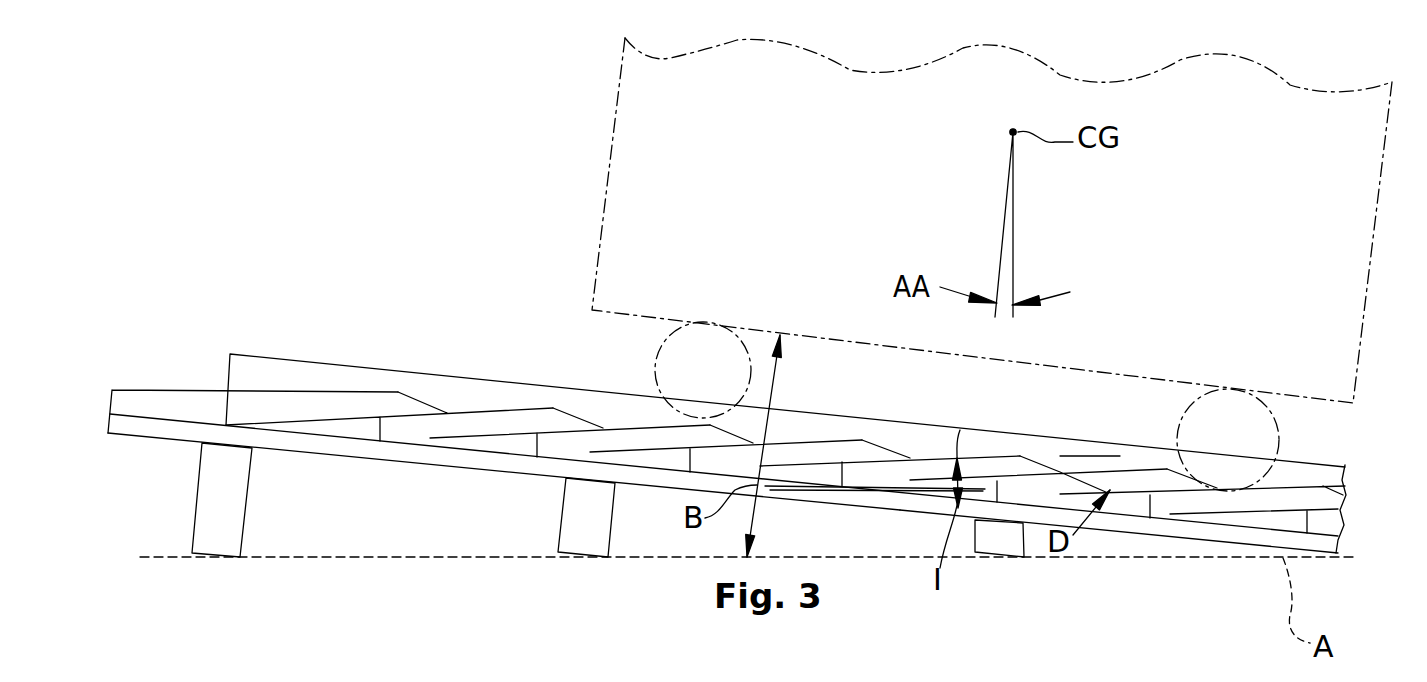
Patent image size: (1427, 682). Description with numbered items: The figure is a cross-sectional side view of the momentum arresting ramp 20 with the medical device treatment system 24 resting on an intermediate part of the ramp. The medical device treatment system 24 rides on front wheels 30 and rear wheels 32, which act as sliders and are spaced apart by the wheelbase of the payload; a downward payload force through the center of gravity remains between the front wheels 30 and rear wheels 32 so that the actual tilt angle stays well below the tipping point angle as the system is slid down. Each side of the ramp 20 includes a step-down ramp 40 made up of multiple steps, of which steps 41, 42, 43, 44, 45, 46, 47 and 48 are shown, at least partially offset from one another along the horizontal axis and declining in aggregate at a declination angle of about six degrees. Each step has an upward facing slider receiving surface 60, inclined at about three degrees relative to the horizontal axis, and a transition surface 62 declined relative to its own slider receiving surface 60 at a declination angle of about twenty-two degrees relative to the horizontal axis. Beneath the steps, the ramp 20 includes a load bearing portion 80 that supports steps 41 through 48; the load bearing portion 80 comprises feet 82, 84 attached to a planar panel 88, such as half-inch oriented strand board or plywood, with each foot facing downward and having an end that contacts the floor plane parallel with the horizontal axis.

The momentum arresting ramp 20 is at (443, 307).
The medical device treatment system 24 is at (1065, 80).
The front wheels 30 is at (1197, 402).
The rear wheels 32 is at (658, 348).
The step-down ramp 40 is at (363, 392).
The step 41 is at (340, 430).
The step 42 is at (480, 425).
The step 43 is at (653, 447).
The step 44 is at (810, 455).
The step 45 is at (917, 473).
The step 46 is at (1140, 483).
The step 47 is at (1270, 497).
The step 48 is at (1322, 520).
The slider receiving surface 60 is at (617, 430).
The transition surface 62 is at (740, 437).
The load bearing portion 80 is at (427, 452).
The foot 82 is at (1002, 538).
The foot 84 is at (587, 532).
The planar panel 88 is at (1218, 533).